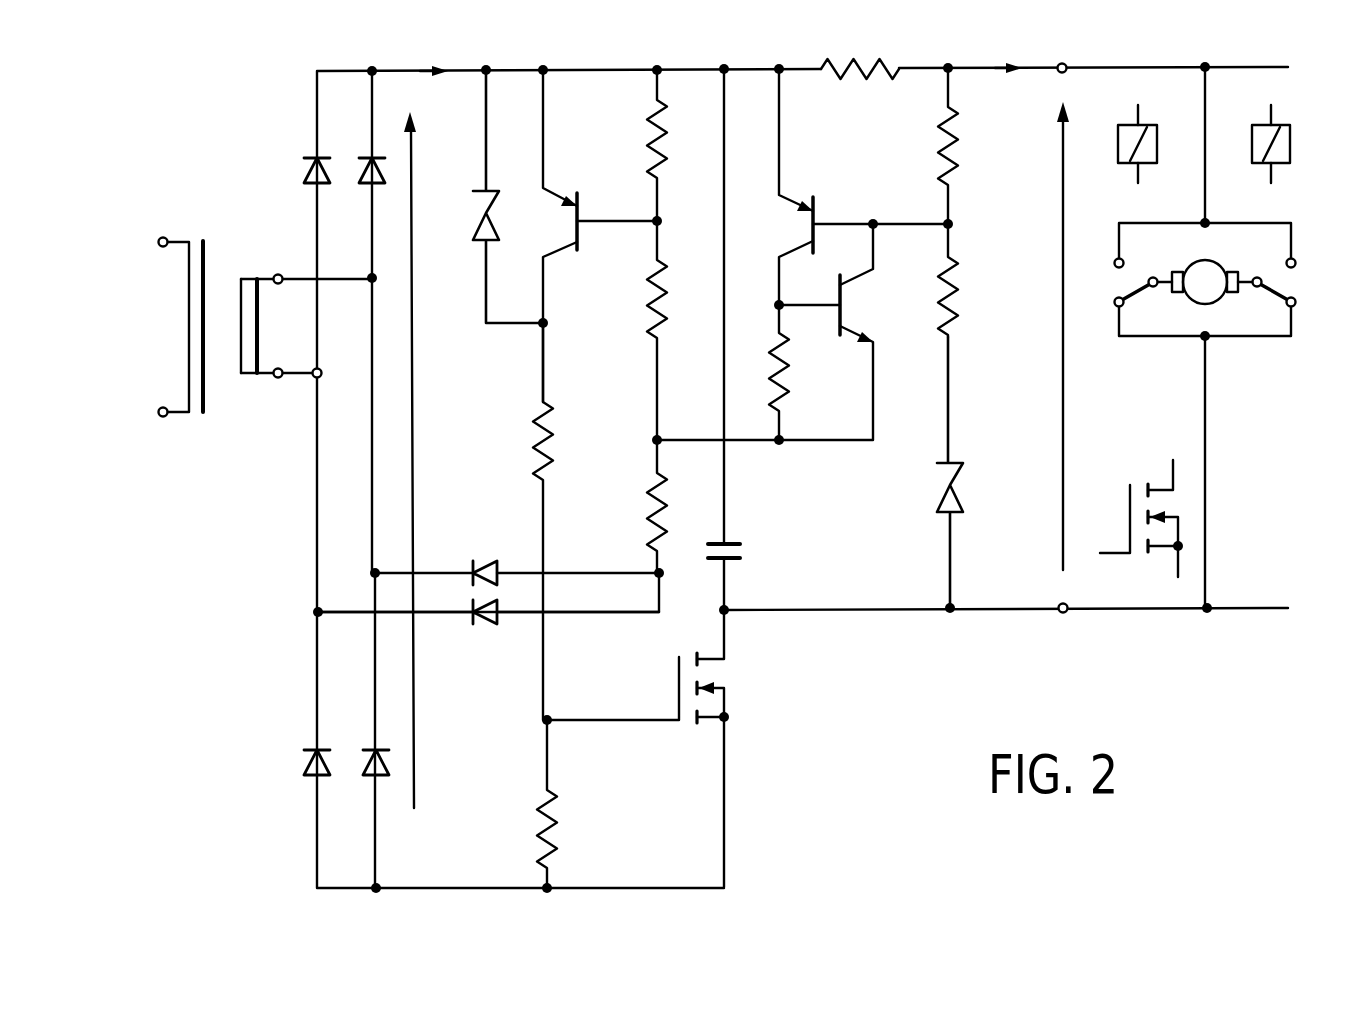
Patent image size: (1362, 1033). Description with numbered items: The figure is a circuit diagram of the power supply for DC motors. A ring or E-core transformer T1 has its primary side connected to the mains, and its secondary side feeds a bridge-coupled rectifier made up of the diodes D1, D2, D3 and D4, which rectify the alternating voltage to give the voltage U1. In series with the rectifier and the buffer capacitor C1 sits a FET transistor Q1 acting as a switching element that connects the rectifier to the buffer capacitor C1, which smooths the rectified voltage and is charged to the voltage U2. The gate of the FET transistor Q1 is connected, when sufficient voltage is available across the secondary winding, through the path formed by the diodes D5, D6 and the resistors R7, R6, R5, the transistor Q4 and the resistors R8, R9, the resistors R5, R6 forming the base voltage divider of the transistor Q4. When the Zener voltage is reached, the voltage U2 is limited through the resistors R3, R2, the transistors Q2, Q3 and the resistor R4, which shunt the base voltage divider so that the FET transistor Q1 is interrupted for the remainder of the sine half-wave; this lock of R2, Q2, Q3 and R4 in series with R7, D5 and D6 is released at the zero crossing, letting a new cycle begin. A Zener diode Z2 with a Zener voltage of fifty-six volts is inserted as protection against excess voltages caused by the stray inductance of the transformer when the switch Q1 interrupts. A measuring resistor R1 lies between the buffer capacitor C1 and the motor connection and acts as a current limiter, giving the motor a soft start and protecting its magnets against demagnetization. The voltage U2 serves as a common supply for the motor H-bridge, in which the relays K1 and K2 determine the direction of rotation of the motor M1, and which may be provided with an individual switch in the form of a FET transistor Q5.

The transformer T1 is at (266, 316).
The rectifier diode D1 is at (298, 174).
The rectifier diode D2 is at (359, 186).
The rectifier diode D3 is at (298, 766).
The rectifier diode D4 is at (364, 778).
The diode D5 is at (517, 559).
The diode D6 is at (488, 628).
The Zener diode Z2 is at (705, 339).
The FET transistor Q1 is at (660, 748).
The transistor Q2 is at (851, 187).
The transistor Q3 is at (781, 332).
The transistor Q4 is at (588, 236).
The FET transistor Q5 is at (1131, 518).
The measuring resistor R1 is at (860, 53).
The resistor R2 is at (930, 146).
The resistor R3 is at (971, 280).
The resistor R4 is at (801, 372).
The resistor R5 is at (639, 145).
The resistor R6 is at (639, 330).
The resistor R7 is at (639, 506).
The resistor R8 is at (526, 521).
The resistor R9 is at (530, 804).
The buffer capacitor C1 is at (744, 339).
The relay K1 is at (1126, 202).
The relay K2 is at (1289, 202).
The motor M1 is at (1205, 337).
The rectifier output voltage U1 is at (429, 460).
The buffer capacitor voltage U2 is at (1047, 336).